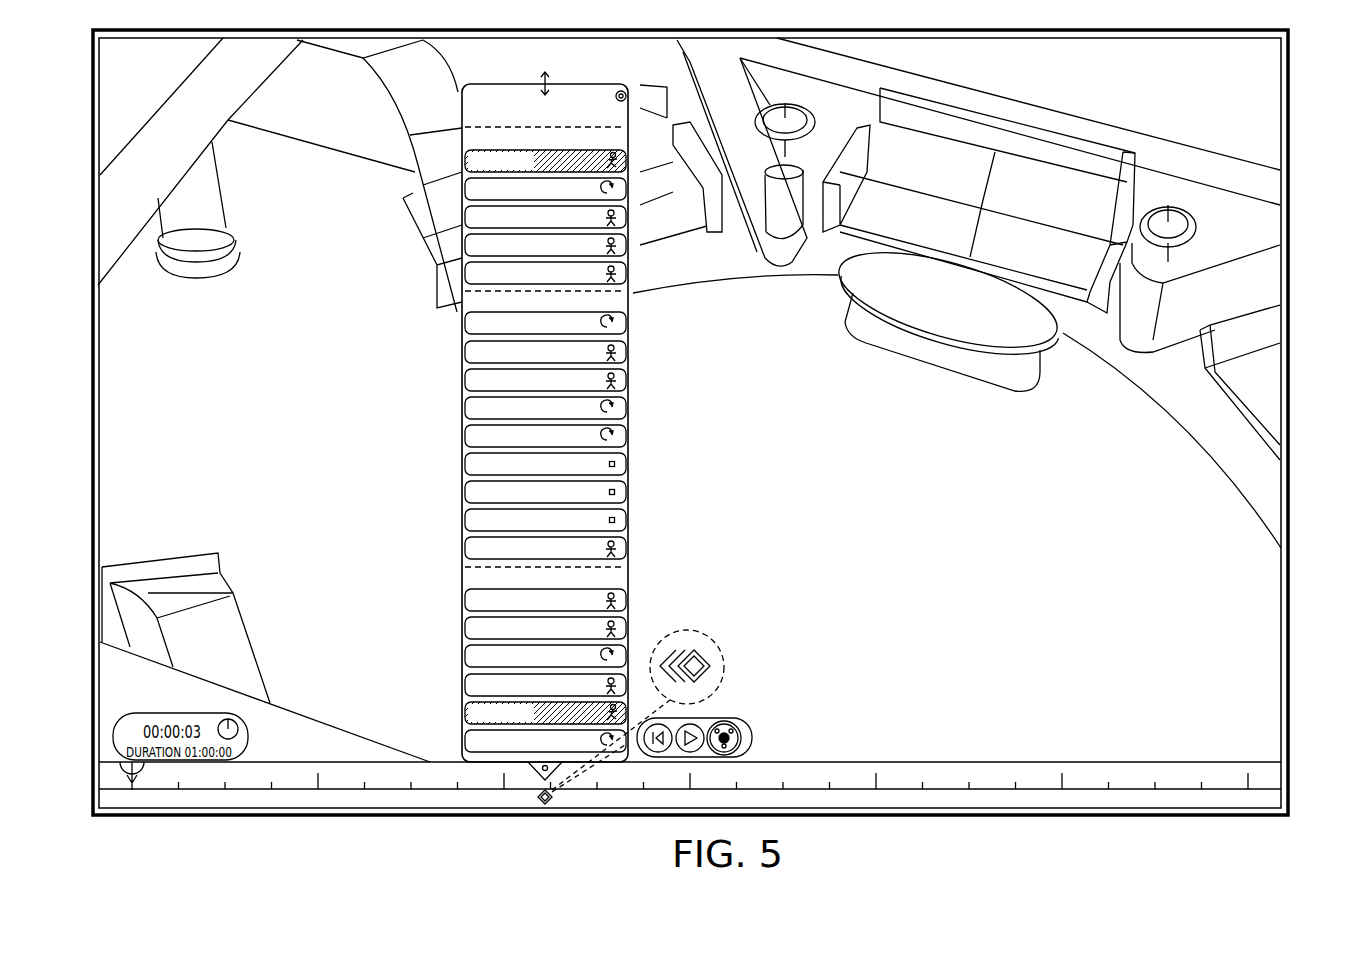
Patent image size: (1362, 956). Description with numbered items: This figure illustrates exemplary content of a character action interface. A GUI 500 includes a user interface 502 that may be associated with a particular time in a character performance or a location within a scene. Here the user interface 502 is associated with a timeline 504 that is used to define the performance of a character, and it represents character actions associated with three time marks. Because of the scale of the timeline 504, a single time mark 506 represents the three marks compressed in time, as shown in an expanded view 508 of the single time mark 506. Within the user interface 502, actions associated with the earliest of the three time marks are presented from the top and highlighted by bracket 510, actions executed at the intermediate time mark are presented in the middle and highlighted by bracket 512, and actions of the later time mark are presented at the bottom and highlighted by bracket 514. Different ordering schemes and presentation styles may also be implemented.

The GUI 500 is at (1288, 170).
The user interface 502 is at (526, 419).
The timeline 504 is at (92, 770).
The single time mark 506 is at (545, 805).
The expanded view 508 is at (703, 632).
The bracket 510 is at (405, 135).
The bracket 512 is at (645, 295).
The bracket 514 is at (452, 570).